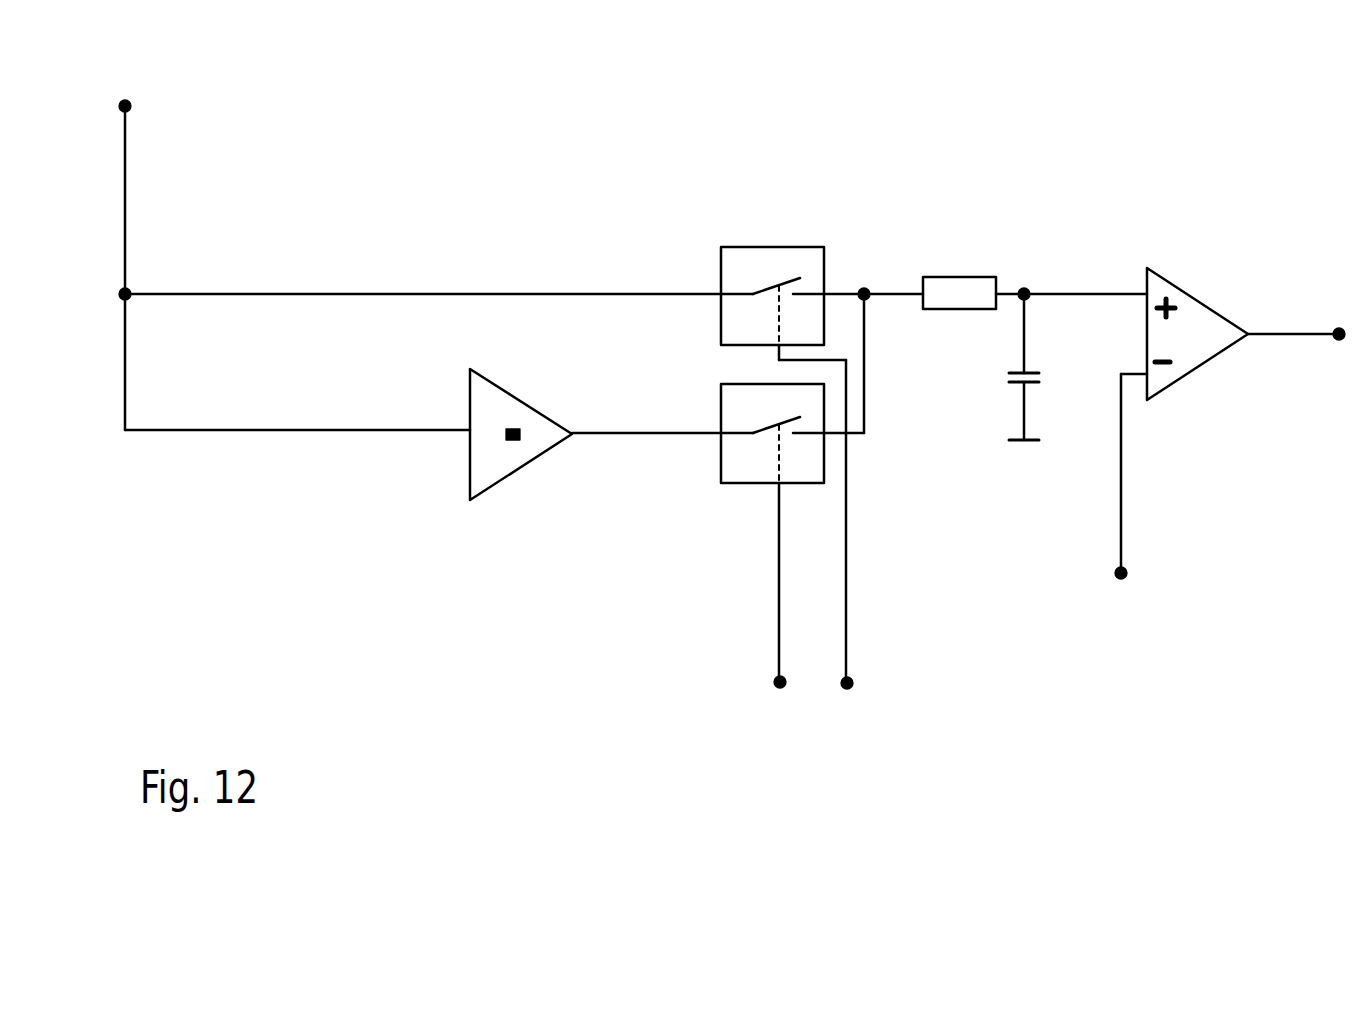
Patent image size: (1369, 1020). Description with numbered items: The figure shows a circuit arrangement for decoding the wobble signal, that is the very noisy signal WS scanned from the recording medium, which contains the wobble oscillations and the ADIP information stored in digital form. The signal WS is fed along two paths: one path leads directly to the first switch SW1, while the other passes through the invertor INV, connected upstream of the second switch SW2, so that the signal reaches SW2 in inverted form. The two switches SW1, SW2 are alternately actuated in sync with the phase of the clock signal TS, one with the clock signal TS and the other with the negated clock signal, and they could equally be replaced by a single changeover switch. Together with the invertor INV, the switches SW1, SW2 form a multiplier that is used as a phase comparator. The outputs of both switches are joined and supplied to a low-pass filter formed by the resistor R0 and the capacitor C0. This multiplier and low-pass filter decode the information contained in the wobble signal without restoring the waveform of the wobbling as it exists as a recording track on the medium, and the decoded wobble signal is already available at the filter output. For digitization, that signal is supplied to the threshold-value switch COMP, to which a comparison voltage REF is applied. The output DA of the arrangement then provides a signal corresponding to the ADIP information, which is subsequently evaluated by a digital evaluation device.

The wobble signal WS is at (389, 259).
The invertor INV is at (595, 421).
The first switch SW1 is at (749, 454).
The second switch SW2 is at (753, 488).
The clock signal TS is at (797, 702).
The resistor R0 is at (941, 271).
The capacitor C0 is at (1035, 364).
The threshold-value switch COMP is at (1136, 298).
The output DA is at (1302, 308).
The comparison voltage REF is at (1152, 485).